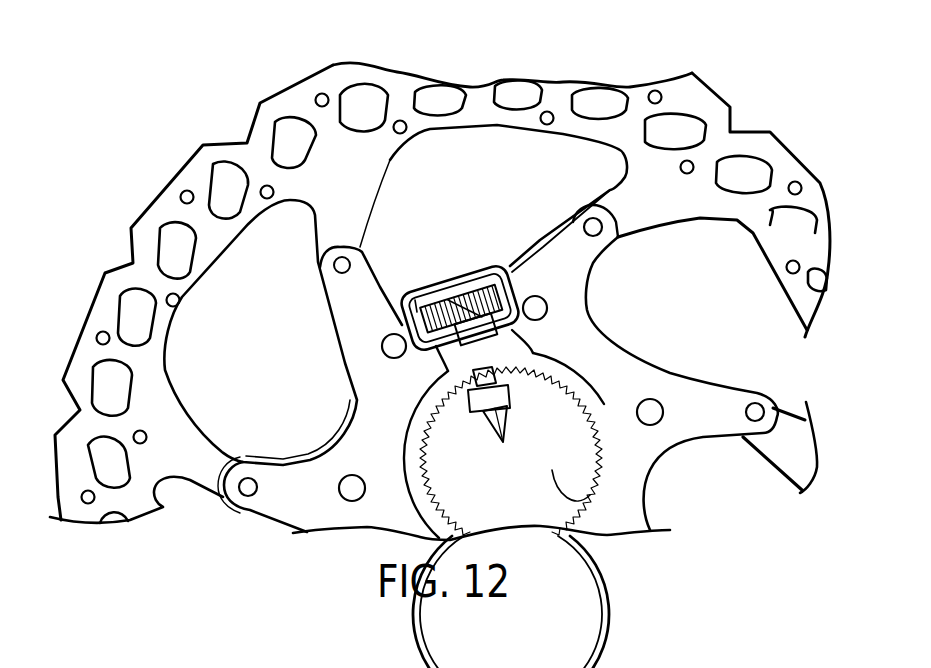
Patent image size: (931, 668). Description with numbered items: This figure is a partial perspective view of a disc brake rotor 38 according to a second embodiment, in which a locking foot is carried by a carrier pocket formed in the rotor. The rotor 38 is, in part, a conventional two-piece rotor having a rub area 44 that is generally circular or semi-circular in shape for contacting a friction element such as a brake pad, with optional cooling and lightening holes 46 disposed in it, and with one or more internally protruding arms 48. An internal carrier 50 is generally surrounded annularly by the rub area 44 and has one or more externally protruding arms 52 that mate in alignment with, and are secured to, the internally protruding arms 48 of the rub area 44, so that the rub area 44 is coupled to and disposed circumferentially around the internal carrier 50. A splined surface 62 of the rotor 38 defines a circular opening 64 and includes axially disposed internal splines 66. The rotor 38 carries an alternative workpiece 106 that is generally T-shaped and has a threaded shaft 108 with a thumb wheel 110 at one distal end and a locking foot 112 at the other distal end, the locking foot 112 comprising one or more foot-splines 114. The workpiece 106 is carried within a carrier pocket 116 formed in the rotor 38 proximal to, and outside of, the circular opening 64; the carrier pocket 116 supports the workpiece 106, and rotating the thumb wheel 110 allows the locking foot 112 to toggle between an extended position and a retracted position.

The rotor 38 is at (690, 100).
The rub area 44 is at (273, 107).
The cooling and lightening holes 46 is at (397, 120).
The internally protruding arms 48 is at (337, 173).
The internal carrier 50 is at (407, 420).
The externally protruding arms 52 is at (337, 308).
The splined surface 62 is at (590, 400).
The circular opening 64 is at (483, 504).
The internal splines 66 is at (552, 520).
The workpiece 106 is at (445, 297).
The threaded shaft 108 is at (473, 330).
The thumb wheel 110 is at (462, 303).
The locking foot 112 is at (472, 385).
The foot-splines 114 is at (500, 420).
The carrier pocket 116 is at (417, 307).